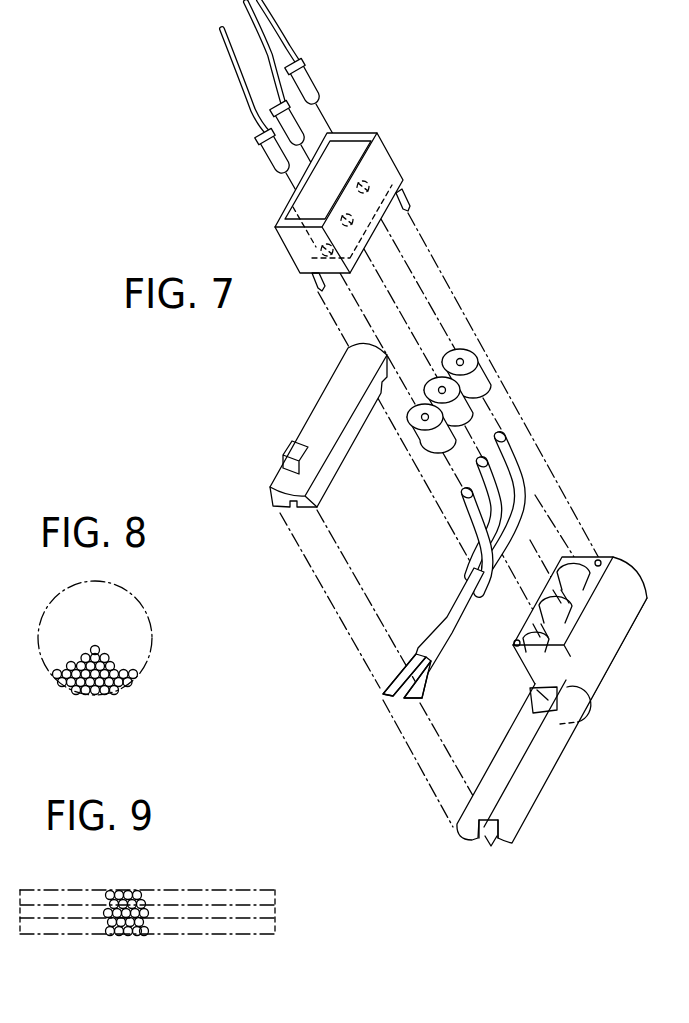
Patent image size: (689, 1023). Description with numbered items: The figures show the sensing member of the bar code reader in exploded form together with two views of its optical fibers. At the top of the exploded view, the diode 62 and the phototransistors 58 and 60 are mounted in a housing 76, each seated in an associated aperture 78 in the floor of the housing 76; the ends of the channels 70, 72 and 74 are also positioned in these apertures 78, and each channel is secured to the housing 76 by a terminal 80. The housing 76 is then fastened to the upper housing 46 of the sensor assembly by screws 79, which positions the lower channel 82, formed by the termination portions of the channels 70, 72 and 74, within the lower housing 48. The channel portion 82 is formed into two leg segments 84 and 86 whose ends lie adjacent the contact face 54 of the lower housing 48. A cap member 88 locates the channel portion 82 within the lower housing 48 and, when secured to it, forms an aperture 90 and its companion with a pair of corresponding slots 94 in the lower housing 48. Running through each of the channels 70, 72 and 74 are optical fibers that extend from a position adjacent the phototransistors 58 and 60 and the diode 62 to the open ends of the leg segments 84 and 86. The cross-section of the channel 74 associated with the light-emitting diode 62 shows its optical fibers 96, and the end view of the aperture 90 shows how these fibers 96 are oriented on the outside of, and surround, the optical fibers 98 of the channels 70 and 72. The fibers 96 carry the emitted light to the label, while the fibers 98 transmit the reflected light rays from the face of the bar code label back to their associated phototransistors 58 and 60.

In FIG. 7, the upper housing 46 is at (617, 635).
In FIG. 7, the lower housing 48 is at (543, 775).
In FIG. 7, the contact face 54 is at (500, 840).
In FIG. 7, the phototransistor 58 is at (318, 96).
In FIG. 7, the phototransistor 60 is at (300, 118).
In FIG. 7, the diode 62 is at (272, 160).
In FIG. 7, the channel 70 is at (510, 437).
In FIG. 7, the channel 72 is at (490, 473).
In FIG. 7, the channel 74 is at (463, 507).
In FIG. 8, the channel 74 is at (138, 607).
In FIG. 7, the housing 76 is at (385, 150).
In FIG. 7, the aperture 78 is at (388, 180).
In FIG. 7, the screws 79 is at (407, 197).
In FIG. 7, the terminal 80 is at (477, 368).
In FIG. 7, the lower channel 82 is at (442, 615).
In FIG. 7, the leg segment 84 is at (383, 690).
In FIG. 7, the leg segment 86 is at (422, 682).
In FIG. 7, the cap member 88 is at (337, 392).
In FIG. 9, the aperture 90 is at (238, 935).
In FIG. 7, the slots 94 is at (478, 838).
In FIG. 8, the optical fibers 96 is at (107, 655).
In FIG. 9, the optical fibers 96 is at (110, 893).
In FIG. 9, the optical fibers 98 is at (143, 908).